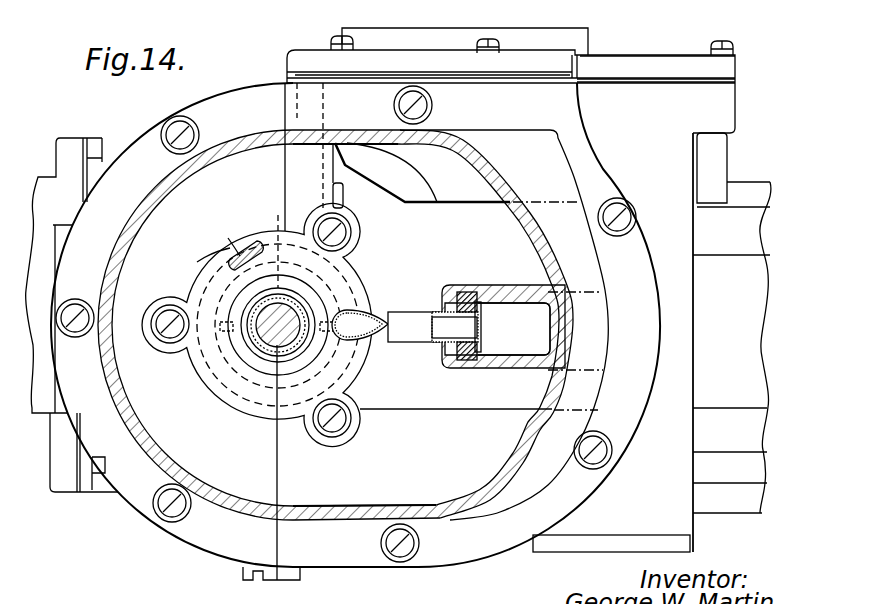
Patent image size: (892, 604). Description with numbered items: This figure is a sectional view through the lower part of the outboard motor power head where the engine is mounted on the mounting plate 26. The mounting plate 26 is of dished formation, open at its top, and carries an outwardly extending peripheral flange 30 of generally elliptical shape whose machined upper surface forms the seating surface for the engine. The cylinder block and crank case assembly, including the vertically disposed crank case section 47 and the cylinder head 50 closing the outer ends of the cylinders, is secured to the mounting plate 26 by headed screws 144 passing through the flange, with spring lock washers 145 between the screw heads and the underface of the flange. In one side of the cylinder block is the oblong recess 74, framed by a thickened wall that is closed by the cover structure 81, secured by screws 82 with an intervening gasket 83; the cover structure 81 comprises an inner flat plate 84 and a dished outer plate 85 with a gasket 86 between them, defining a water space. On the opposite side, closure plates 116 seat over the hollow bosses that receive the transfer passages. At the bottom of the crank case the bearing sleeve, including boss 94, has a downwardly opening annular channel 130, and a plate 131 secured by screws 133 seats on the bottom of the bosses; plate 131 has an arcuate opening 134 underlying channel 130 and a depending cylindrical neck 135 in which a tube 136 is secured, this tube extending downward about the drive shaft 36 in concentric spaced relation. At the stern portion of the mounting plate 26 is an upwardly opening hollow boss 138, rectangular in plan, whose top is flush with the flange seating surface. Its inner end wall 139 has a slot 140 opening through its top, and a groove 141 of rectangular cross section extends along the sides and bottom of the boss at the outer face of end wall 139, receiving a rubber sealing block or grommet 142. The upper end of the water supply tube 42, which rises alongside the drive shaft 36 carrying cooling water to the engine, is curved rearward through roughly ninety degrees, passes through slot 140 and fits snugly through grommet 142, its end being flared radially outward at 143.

The mounting plate 26 is at (110, 416).
The peripheral flange 30 is at (100, 443).
The drive shaft 36 is at (300, 300).
The water supply tube 42 is at (398, 312).
The crank case section 47 is at (720, 112).
The cylinder head 50 is at (757, 300).
The recess 74 is at (485, 193).
The cover structure 81 is at (677, 54).
The screws 82 is at (342, 35).
The gasket 83 is at (635, 80).
The inner flat plate 84 is at (592, 80).
The outer plate 85 is at (305, 50).
The gasket 86 is at (395, 72).
The boss 94 is at (204, 264).
The closure plates 116 is at (549, 546).
The annular channel 130 is at (254, 248).
The plate 131 is at (245, 373).
The screws 133 is at (351, 233).
The arcuate opening 134 is at (232, 248).
The cylindrical neck 135 is at (255, 340).
The tube 136 is at (272, 348).
The hollow boss 138 is at (500, 290).
The inner end wall 139 is at (445, 296).
The slot 140 is at (441, 344).
The groove 141 is at (466, 291).
The sealing block or grommet 142 is at (464, 361).
The flared end 143 is at (482, 326).
The headed screws 144 is at (172, 128).
The spring lock washers 145 is at (200, 130).